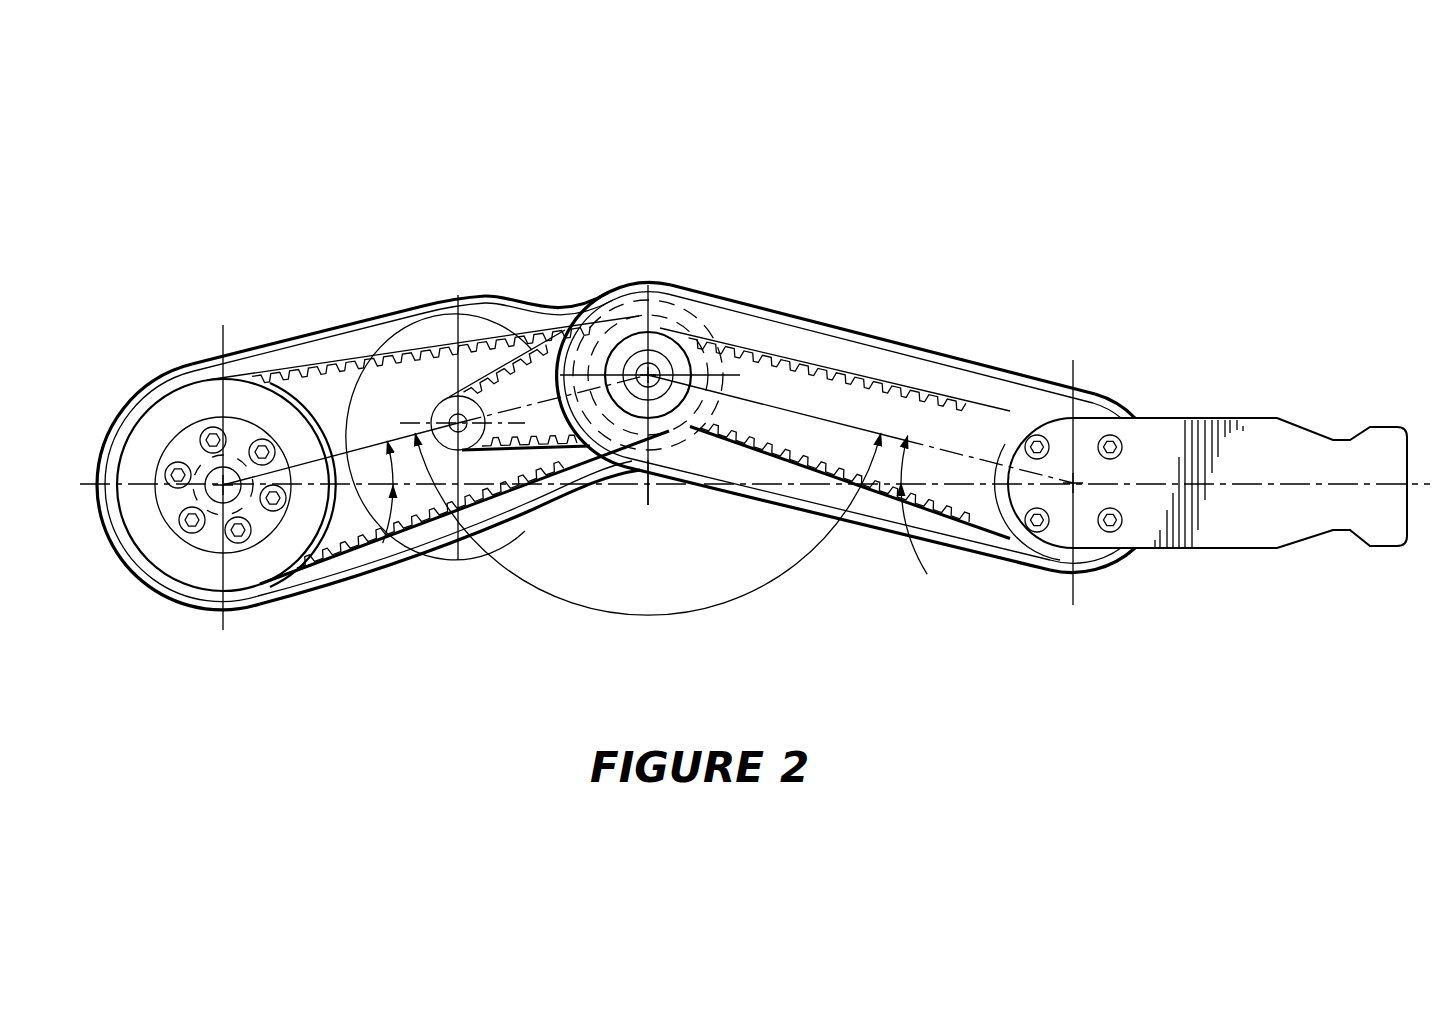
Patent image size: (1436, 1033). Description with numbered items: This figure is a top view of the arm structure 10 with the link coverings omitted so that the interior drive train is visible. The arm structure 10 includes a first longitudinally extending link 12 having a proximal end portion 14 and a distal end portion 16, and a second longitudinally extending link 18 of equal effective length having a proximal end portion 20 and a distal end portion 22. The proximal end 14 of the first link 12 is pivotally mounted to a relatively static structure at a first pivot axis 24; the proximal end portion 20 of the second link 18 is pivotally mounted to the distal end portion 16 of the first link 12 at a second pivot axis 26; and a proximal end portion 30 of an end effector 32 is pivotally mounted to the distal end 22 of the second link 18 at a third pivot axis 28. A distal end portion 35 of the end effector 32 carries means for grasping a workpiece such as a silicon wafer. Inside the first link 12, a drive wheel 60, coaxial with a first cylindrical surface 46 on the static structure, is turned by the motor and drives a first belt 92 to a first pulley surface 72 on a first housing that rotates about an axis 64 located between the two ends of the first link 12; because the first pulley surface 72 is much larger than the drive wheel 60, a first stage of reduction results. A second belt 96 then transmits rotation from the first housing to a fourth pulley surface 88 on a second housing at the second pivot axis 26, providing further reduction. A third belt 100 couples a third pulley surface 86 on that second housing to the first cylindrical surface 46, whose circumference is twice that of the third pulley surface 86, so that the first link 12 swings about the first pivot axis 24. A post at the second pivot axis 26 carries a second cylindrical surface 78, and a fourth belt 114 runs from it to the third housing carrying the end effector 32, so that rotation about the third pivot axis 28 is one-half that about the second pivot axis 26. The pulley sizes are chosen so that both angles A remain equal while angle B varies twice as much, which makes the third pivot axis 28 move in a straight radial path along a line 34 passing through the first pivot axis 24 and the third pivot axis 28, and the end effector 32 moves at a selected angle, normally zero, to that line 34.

The arm structure 10 is at (457, 188).
The first longitudinally extending link 12 is at (290, 316).
The proximal end portion of the first link 14 is at (152, 377).
The distal end portion of the first link 16 is at (620, 478).
The second longitudinally extending link 18 is at (952, 317).
The proximal end portion of the second link 20 is at (668, 282).
The distal end portion of the second link 22 is at (1130, 405).
The first pivot axis 24 is at (222, 487).
The second pivot axis 26 is at (655, 396).
The third pivot axis 28 is at (1076, 486).
The proximal end portion of the end effector 30 is at (1010, 508).
The end effector 32 is at (1292, 398).
The line 34 is at (663, 490).
The distal end portion of the end effector 35 is at (1398, 423).
The first cylindrical surface 46 is at (200, 377).
The drive wheel 60 is at (200, 465).
The axis 64 is at (476, 438).
The first pulley surface 72 is at (428, 312).
The second cylindrical surface 78 is at (612, 333).
The third pulley surface 86 is at (702, 383).
The fourth pulley surface 88 is at (712, 315).
The first belt 92 is at (343, 530).
The second belt 96 is at (478, 397).
The third belt 100 is at (363, 543).
The fourth belt 114 is at (826, 366).
The angle A is at (653, 505).
The angle B is at (648, 530).